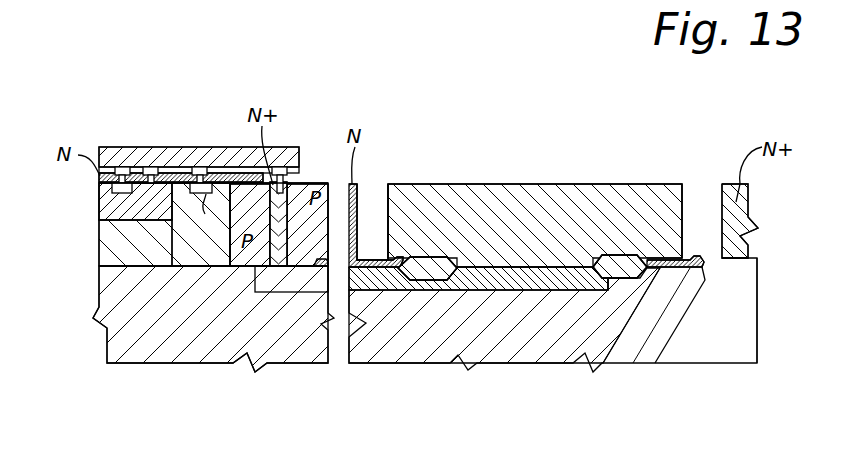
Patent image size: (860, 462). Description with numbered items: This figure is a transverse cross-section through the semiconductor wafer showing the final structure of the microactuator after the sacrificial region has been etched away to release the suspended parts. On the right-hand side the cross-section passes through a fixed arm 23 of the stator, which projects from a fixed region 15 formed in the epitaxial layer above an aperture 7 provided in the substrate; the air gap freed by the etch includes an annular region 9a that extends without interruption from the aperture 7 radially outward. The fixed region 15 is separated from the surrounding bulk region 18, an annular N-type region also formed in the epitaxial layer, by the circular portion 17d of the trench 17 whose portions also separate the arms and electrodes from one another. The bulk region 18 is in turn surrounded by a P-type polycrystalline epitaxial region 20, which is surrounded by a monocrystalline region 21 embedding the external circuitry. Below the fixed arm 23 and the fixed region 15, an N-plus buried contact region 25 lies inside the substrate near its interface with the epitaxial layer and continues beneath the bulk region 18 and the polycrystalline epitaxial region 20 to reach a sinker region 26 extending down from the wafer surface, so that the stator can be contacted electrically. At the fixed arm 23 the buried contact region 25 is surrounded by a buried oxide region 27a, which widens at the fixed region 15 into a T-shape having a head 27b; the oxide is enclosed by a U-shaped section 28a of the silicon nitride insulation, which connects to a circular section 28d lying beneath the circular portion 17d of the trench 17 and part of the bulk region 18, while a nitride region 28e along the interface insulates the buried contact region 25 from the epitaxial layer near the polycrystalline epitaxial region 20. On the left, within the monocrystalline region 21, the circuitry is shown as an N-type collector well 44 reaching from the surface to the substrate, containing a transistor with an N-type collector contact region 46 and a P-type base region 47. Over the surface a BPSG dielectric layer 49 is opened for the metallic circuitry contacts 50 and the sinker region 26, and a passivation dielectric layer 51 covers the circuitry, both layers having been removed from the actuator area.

The aperture 7 is at (723, 337).
The annular region 9a is at (725, 280).
The fixed region 15 is at (512, 184).
The trench 17 is at (698, 222).
The circular portion of the trench 17d is at (381, 185).
The bulk region 18 is at (375, 212).
The polycrystalline epitaxial region 20 is at (322, 188).
The monocrystalline region 21 is at (243, 182).
The fixed arm 23 is at (587, 184).
The buried contact region 25 is at (256, 284).
The sinker region 26 is at (317, 262).
The buried oxide region 27a is at (613, 279).
The head of the buried oxide region 27b is at (410, 281).
The U-shaped section 28a is at (660, 274).
The circular section 28d is at (364, 268).
The nitride region 28e is at (318, 262).
The collector well 44 is at (105, 248).
The collector contact region 46 is at (208, 167).
The base region 47 is at (100, 210).
The dielectric layer 49 is at (179, 172).
The circuitry contacts 50 is at (149, 168).
The passivation dielectric layer 51 is at (120, 160).